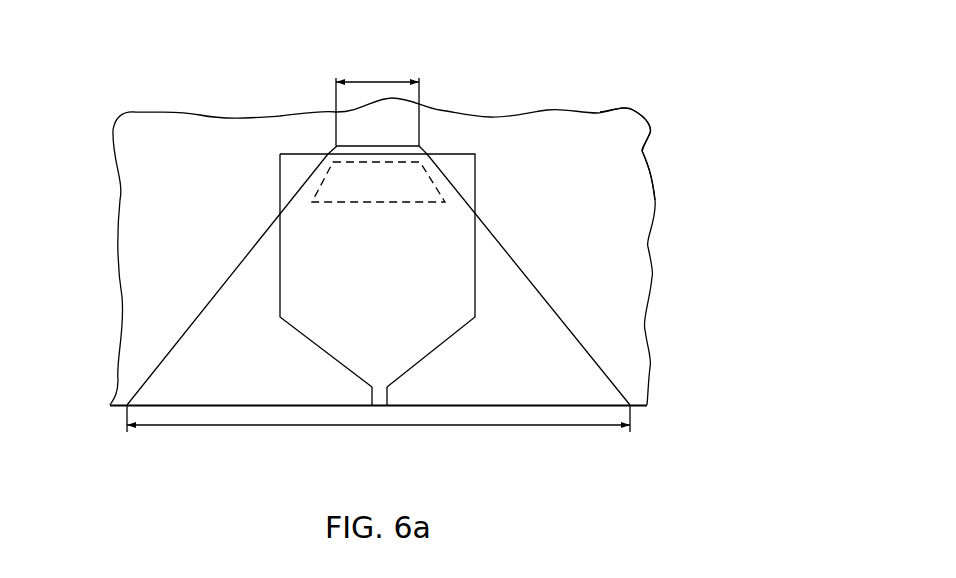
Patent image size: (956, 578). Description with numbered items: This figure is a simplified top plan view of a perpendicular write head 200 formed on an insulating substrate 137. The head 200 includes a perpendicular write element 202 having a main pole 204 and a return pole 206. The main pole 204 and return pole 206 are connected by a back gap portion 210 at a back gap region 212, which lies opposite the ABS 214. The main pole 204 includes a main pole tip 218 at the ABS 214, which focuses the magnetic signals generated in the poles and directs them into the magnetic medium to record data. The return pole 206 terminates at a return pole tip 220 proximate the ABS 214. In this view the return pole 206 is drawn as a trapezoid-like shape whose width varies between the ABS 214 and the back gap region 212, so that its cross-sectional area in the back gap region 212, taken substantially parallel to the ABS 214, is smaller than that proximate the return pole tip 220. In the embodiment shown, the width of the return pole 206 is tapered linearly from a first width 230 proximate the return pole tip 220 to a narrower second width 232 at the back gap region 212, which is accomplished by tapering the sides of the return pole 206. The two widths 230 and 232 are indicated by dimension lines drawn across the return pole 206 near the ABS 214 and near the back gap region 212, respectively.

The head 200 is at (672, 72).
The perpendicular write element 202 is at (605, 295).
The insulating substrate 137 is at (620, 188).
The main pole 204 is at (292, 277).
The return pole 206 is at (188, 362).
The back gap portion 210 is at (326, 176).
The back gap region 212 is at (462, 140).
The main pole tip 218 is at (378, 405).
The return pole tip 220 is at (172, 407).
The width 230 is at (530, 427).
The width 232 is at (377, 82).
The ABS 214 is at (641, 403).